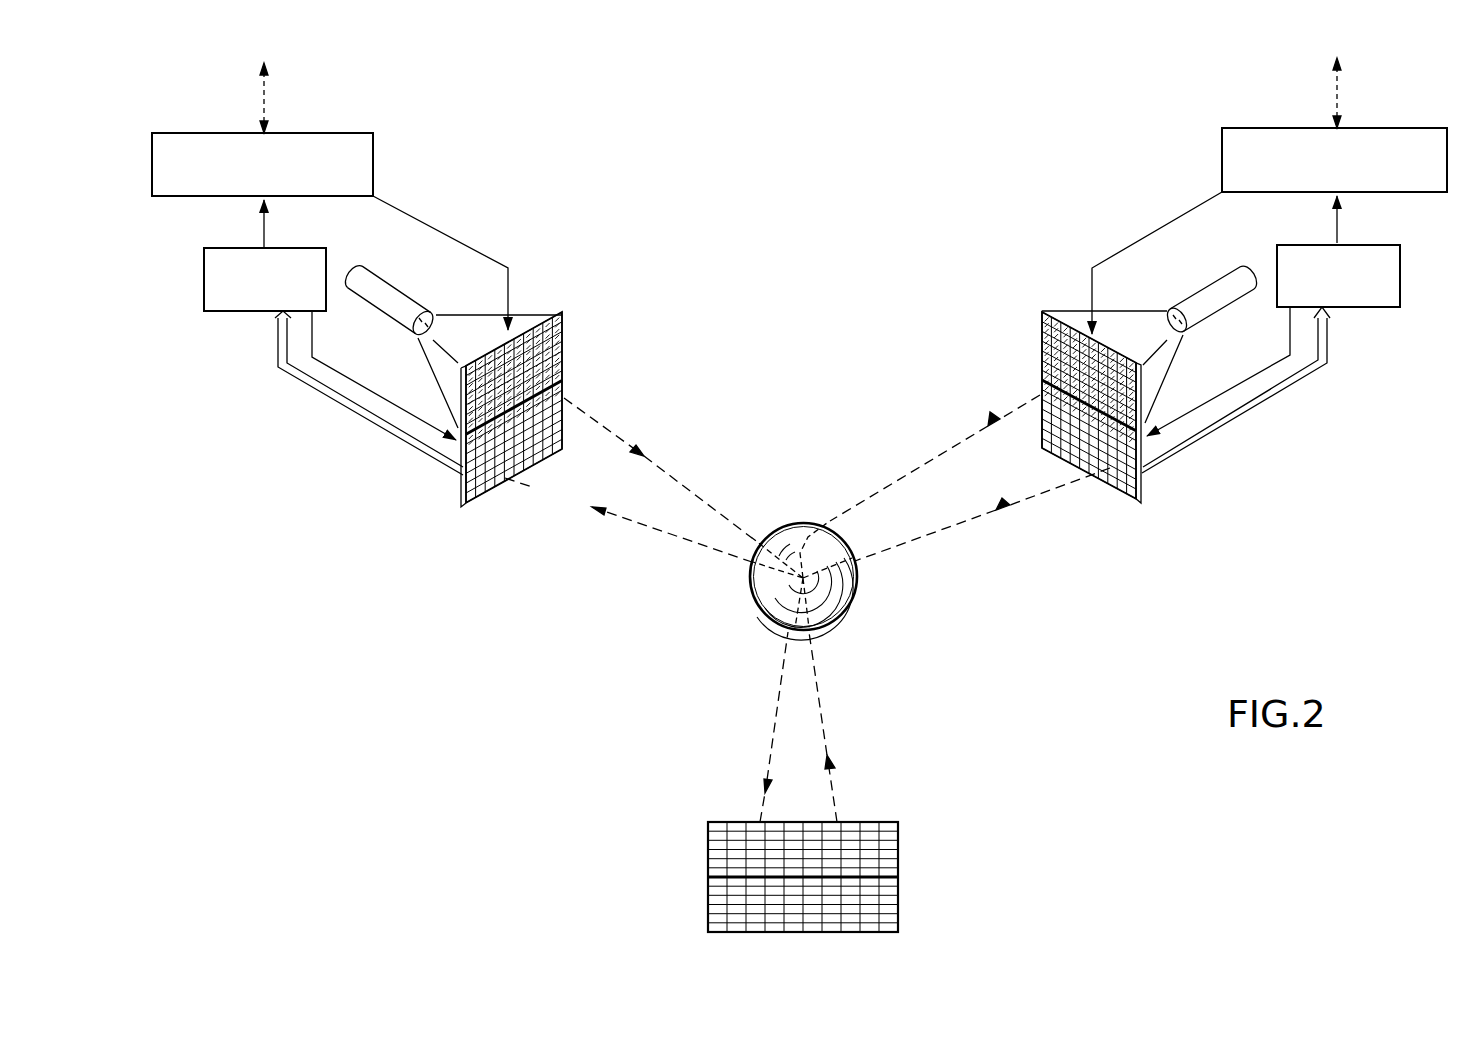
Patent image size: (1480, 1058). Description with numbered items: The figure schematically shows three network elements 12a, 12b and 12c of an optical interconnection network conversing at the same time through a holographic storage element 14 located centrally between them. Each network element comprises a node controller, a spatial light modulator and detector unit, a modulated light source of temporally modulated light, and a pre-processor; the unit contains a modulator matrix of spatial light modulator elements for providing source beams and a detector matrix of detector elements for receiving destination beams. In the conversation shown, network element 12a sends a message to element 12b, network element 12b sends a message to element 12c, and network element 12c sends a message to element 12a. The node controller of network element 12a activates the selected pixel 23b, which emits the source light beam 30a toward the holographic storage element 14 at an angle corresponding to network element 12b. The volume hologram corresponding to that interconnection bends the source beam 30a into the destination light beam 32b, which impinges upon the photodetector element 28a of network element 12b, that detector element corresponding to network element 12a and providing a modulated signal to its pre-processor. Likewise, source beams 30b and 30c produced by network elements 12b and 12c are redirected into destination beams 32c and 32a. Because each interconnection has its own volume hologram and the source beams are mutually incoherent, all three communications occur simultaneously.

The first network element 12a is at (273, 433).
The second network element 12b is at (1319, 392).
The third network element 12c is at (972, 768).
The holographic storage element 14 is at (843, 603).
The selected pixel 23b is at (516, 350).
The detector element 28a is at (1100, 474).
The source light beam 30a is at (713, 508).
The source light beam 30b is at (887, 483).
The source light beam 30c is at (818, 688).
The destination light beam 32a is at (630, 523).
The destination light beam 32b is at (920, 538).
The destination light beam 32c is at (765, 730).